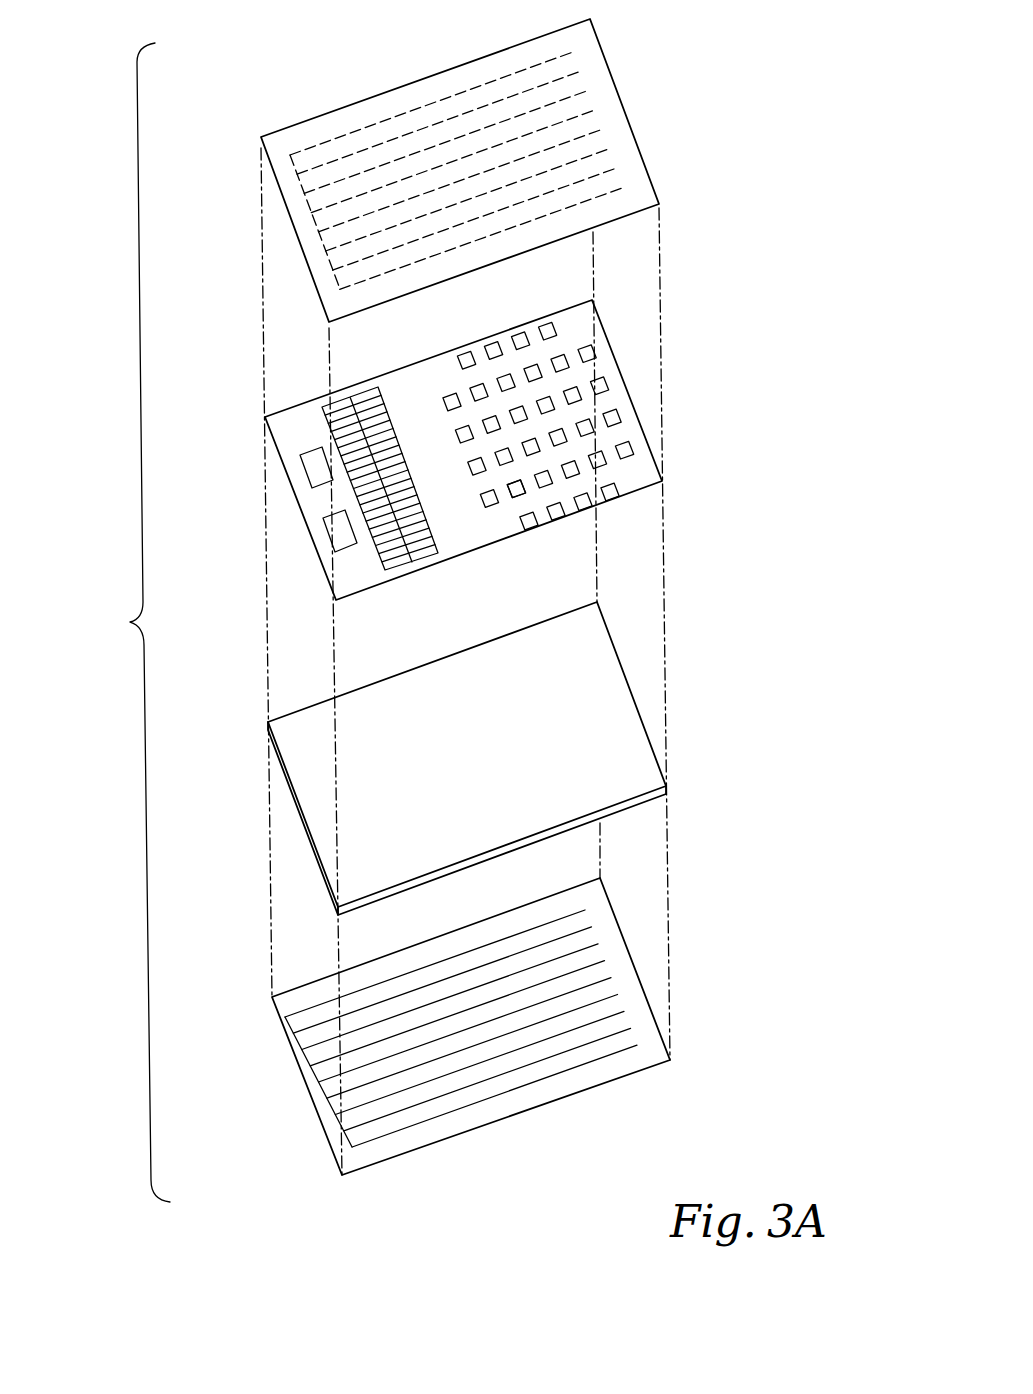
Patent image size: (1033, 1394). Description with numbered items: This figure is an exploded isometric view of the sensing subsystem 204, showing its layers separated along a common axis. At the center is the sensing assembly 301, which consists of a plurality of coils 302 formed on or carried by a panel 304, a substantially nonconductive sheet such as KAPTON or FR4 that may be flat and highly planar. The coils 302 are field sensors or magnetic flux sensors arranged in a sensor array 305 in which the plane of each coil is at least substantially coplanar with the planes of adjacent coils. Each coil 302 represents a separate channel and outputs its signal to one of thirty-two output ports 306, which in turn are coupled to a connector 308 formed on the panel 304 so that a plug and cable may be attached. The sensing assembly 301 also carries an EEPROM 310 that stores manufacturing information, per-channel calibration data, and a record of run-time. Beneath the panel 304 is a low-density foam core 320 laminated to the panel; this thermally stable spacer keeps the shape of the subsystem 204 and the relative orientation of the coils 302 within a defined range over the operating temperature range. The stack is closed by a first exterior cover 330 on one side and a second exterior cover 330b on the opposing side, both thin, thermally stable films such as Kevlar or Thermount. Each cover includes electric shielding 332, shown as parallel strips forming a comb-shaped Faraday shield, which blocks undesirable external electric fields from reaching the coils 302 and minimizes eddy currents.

The sensing subsystem 204 is at (130, 622).
The sensing assembly 301 is at (530, 464).
The coils 302 is at (613, 413).
The panel 304 is at (638, 477).
The sensor array 305 is at (508, 508).
The output ports 306 is at (397, 567).
The connector 308 is at (340, 533).
The EEPROM 310 is at (313, 460).
The foam core 320 is at (655, 673).
The first exterior cover 330 is at (655, 108).
The second exterior cover 330b is at (667, 983).
The electric shielding 332 is at (485, 83).